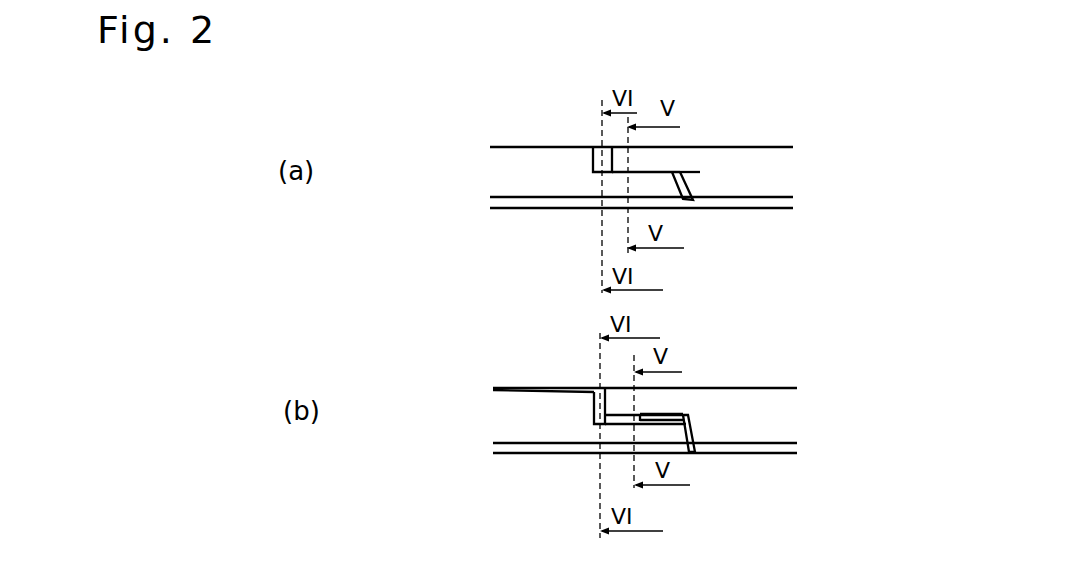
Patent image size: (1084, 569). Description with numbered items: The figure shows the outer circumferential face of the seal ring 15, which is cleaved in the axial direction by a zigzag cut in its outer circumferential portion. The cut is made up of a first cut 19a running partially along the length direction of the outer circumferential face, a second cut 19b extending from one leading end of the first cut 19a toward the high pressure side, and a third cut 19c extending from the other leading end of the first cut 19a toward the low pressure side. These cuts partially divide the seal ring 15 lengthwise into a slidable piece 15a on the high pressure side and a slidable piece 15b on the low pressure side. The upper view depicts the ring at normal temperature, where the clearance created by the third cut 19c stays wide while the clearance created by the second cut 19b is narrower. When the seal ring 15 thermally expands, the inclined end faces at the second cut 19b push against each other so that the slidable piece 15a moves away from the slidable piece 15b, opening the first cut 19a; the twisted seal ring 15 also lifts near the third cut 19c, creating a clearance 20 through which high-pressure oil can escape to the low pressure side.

The seal ring 15 is at (678, 313).
The slidable piece 15a is at (647, 188).
The slidable piece 15b is at (667, 162).
The first cut 19a is at (652, 170).
The second cut 19b is at (688, 195).
The third cut 19c is at (601, 146).
The clearance 20 is at (593, 387).